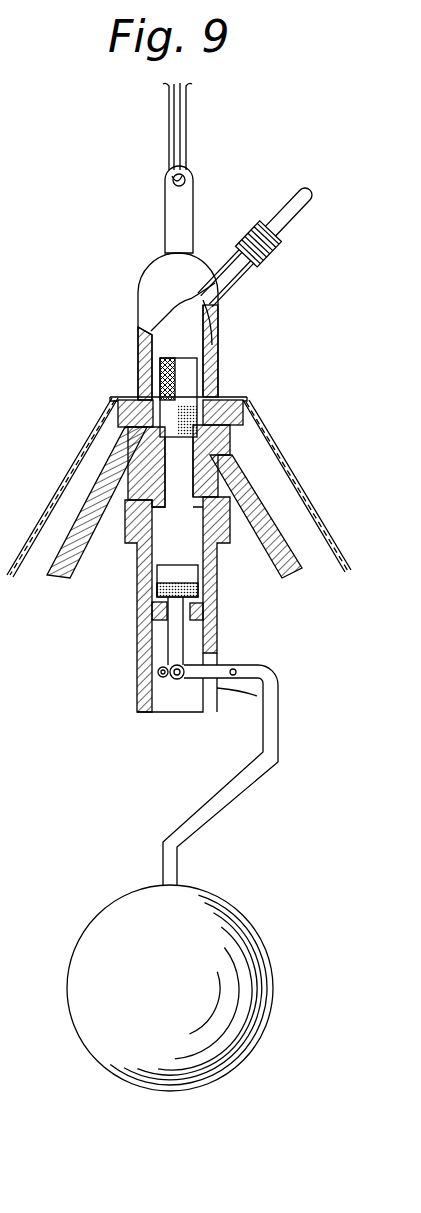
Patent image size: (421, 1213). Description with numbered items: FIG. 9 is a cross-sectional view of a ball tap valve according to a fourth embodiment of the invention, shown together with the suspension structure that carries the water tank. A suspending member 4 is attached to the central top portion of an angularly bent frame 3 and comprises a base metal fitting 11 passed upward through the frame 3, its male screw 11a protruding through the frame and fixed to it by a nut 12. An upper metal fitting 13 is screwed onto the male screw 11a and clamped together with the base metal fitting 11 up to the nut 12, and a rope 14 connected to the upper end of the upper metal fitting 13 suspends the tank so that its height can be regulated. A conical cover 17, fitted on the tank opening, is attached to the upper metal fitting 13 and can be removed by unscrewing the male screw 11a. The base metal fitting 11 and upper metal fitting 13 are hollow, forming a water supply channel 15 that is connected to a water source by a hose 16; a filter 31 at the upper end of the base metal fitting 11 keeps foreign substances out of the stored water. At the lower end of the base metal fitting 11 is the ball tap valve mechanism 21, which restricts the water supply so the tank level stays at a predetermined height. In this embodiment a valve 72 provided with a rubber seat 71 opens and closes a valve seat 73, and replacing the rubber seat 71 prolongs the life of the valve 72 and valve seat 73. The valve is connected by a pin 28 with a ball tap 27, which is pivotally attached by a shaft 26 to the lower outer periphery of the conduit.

The frame 3 is at (256, 495).
The suspending member 4 is at (130, 329).
The base metal fitting 11 is at (113, 477).
The male screw 11a is at (111, 400).
The nut 12 is at (231, 437).
The upper metal fitting 13 is at (219, 365).
The rope 14 is at (186, 128).
The water supply channel 15 is at (192, 346).
The hose 16 is at (290, 220).
The conical cover 17 is at (319, 526).
The ball tap valve mechanism 21 is at (128, 653).
The shaft 26 is at (238, 667).
The ball tap 27 is at (273, 978).
The pin 28 is at (177, 681).
The filter 31 is at (176, 358).
The rubber seat 71 is at (199, 590).
The valve 72 is at (192, 573).
The valve seat 73 is at (156, 598).